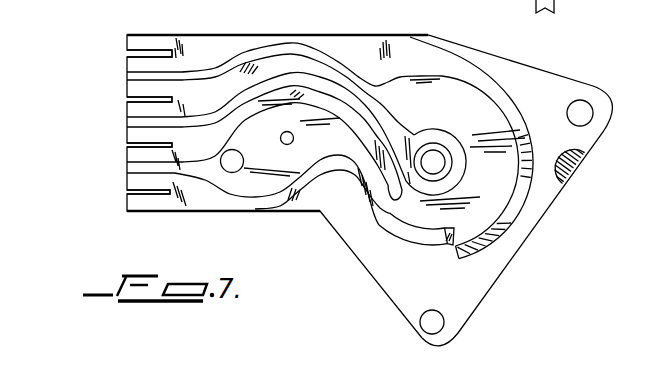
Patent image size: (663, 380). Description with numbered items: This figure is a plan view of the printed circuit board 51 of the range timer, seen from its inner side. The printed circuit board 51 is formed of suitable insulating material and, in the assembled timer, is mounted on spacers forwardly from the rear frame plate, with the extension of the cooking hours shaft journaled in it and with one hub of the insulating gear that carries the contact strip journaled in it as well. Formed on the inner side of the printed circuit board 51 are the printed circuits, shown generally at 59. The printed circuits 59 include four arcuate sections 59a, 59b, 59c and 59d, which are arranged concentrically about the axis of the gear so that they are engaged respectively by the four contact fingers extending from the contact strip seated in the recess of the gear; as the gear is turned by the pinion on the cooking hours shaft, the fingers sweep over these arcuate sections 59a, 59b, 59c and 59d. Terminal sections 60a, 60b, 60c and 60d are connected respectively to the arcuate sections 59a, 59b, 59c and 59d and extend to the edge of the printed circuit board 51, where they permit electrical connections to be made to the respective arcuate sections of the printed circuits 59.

The printed circuits 59 is at (539, 86).
The printed circuit board 51 is at (596, 139).
The arcuate section 59a is at (441, 131).
The arcuate section 59b is at (386, 136).
The arcuate section 59c is at (440, 245).
The arcuate section 59d is at (500, 236).
The terminal section 60a is at (132, 88).
The terminal section 60b is at (132, 135).
The terminal section 60c is at (132, 180).
The terminal section 60d is at (131, 41).